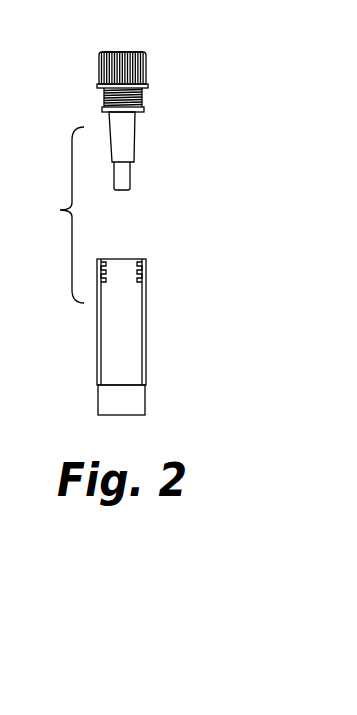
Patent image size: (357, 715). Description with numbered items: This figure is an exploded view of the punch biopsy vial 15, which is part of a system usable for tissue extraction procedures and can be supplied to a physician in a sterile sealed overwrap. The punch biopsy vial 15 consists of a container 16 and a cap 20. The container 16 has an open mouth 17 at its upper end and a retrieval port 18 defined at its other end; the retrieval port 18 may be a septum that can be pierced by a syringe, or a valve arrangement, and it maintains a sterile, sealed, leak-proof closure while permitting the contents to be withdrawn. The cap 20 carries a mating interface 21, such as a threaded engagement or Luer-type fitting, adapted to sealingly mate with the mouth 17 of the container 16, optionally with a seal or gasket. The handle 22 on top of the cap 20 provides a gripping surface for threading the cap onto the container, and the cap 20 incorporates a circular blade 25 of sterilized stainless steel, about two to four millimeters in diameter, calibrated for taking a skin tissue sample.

The punch biopsy vial 15 is at (58, 215).
The container 16 is at (130, 321).
The open mouth 17 is at (144, 268).
The retrieval port 18 is at (146, 414).
The cap 20 is at (147, 71).
The mating interface 21 is at (145, 100).
The handle 22 is at (130, 52).
The circular blade 25 is at (131, 172).